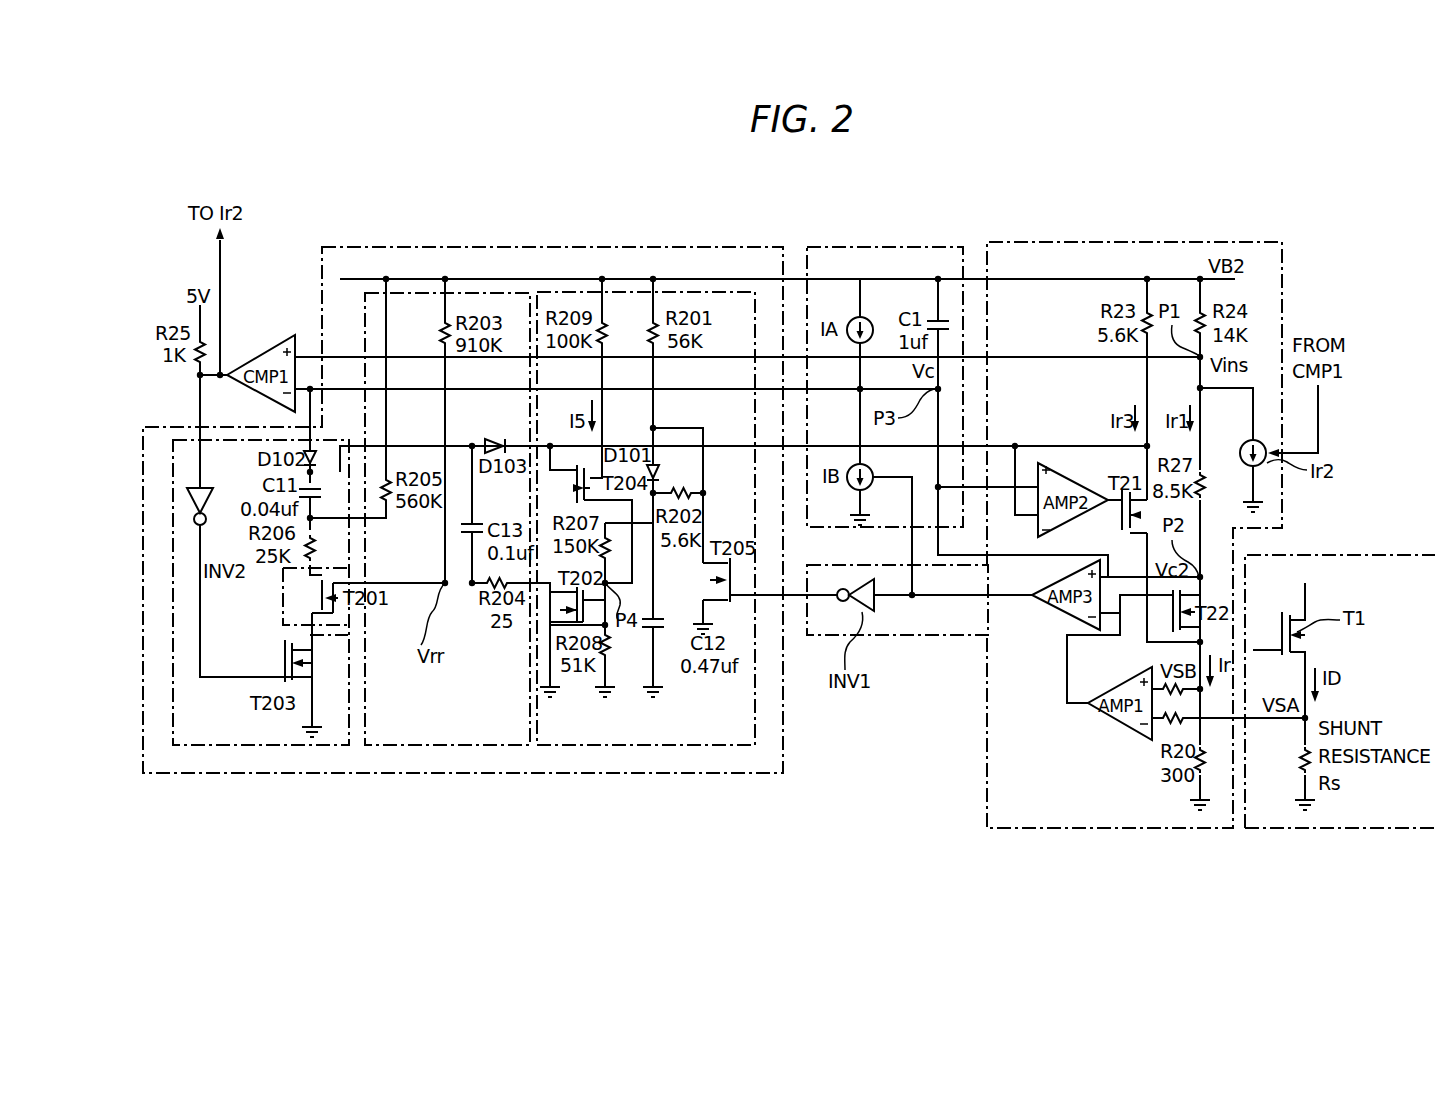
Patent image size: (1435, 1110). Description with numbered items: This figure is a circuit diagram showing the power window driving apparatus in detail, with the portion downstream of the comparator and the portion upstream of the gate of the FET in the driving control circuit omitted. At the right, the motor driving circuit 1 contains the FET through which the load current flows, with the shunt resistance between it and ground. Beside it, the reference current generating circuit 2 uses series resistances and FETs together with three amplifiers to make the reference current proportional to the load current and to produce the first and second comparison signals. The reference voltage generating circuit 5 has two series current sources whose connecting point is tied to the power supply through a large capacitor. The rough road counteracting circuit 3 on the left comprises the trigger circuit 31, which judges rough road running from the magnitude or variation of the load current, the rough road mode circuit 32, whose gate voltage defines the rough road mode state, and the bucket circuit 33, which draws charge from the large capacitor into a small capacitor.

The motor driving circuit 1 is at (1372, 555).
The reference current generating circuit 2 is at (1103, 242).
The rough road counteracting circuit 3 is at (528, 247).
The reference voltage generating circuit 5 is at (893, 247).
The trigger circuit 31 is at (699, 745).
The rough road mode circuit 32 is at (452, 745).
The bucket circuit 33 is at (241, 745).